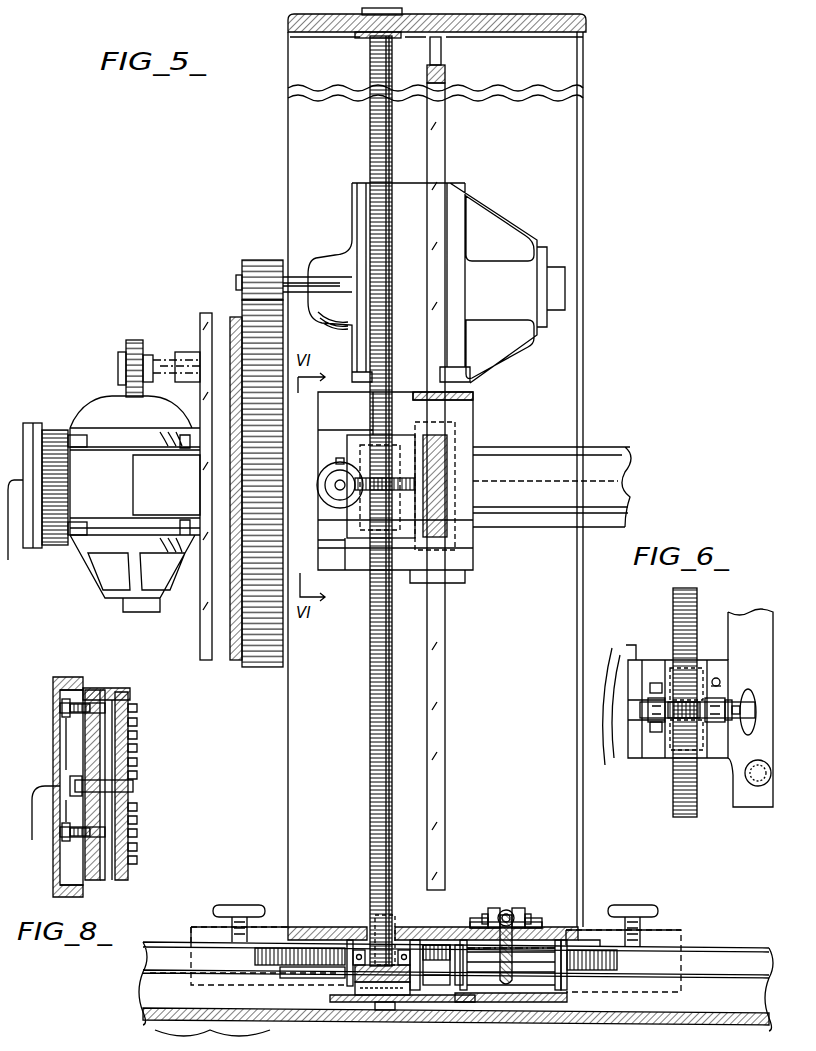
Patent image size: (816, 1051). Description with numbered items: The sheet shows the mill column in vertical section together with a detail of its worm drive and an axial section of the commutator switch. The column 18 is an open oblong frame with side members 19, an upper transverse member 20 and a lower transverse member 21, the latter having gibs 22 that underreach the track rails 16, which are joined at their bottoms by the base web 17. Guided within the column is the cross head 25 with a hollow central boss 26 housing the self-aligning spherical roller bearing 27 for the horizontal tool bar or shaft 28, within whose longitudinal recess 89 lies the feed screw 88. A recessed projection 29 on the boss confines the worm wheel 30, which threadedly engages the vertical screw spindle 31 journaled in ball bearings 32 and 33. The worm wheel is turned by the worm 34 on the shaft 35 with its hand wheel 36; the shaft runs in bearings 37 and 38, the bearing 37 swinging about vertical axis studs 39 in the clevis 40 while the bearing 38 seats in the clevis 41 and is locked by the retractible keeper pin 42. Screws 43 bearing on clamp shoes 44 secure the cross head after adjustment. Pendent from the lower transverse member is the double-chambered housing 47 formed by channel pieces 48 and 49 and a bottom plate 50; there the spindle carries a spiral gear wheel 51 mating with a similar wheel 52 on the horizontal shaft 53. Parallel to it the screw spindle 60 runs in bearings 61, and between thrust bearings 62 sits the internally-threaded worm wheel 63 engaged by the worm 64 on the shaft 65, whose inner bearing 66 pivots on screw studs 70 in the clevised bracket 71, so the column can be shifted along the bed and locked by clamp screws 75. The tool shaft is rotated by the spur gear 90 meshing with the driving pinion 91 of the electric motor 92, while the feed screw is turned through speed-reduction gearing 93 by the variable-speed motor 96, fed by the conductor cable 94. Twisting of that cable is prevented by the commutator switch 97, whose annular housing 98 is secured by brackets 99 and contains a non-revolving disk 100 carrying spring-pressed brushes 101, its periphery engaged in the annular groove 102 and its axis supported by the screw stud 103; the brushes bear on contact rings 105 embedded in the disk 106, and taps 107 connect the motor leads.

In FIG. 5, the track rails 16 is at (724, 962).
In FIG. 5, the base web 17 is at (705, 1026).
In FIG. 5, the column 18 is at (612, 383).
In FIG. 5, the side members 19 is at (585, 406).
In FIG. 5, the upper transverse member 20 is at (508, 36).
In FIG. 5, the lower transverse member 21 is at (575, 930).
In FIG. 5, the gibs 22 is at (680, 975).
In FIG. 5, the cross head 25 is at (418, 598).
In FIG. 6, the cross head 25 is at (640, 780).
In FIG. 5, the hollow central boss 26 is at (473, 558).
In FIG. 6, the hollow central boss 26 is at (615, 650).
In FIG. 5, the self-aligning spherical roller bearing 27 is at (450, 425).
In FIG. 5, the tool bar or shaft 28 is at (543, 447).
In FIG. 5, the recessed projection 29 is at (365, 540).
In FIG. 5, the worm wheel 30 is at (450, 484).
In FIG. 5, the vertical screw spindle 31 is at (370, 640).
In FIG. 6, the vertical screw spindle 31 is at (673, 598).
In FIG. 5, the ball bearing 32 is at (358, 38).
In FIG. 5, the ball bearing 33 is at (374, 1010).
In FIG. 5, the worm 34 is at (320, 528).
In FIG. 6, the worm 34 is at (686, 684).
In FIG. 5, the shaft 35 is at (328, 470).
In FIG. 6, the shaft 35 is at (738, 706).
In FIG. 5, the hand wheel 36 is at (318, 482).
In FIG. 6, the hand wheel 36 is at (750, 690).
In FIG. 6, the bearing 37 is at (648, 708).
In FIG. 6, the bearing 38 is at (730, 720).
In FIG. 6, the vertical axis studs 39 is at (654, 683).
In FIG. 6, the clevis 40 is at (628, 728).
In FIG. 6, the clevis 41 is at (710, 722).
In FIG. 5, the retractible keeper pin 42 is at (338, 440).
In FIG. 6, the retractible keeper pin 42 is at (716, 677).
In FIG. 6, the manually-operable screws 43 is at (758, 786).
In FIG. 5, the clamp shoes 44 is at (437, 722).
In FIG. 5, the double-chambered housing 47 is at (540, 1002).
In FIG. 5, the channel pieces 48 is at (348, 942).
In FIG. 5, the channel pieces 49 is at (445, 945).
In FIG. 5, the bottom plate 50 is at (386, 1003).
In FIG. 5, the spiral gear wheel 51 is at (355, 972).
In FIG. 5, the spiral gear wheel 52 is at (375, 950).
In FIG. 5, the horizontal shaft 53 is at (290, 970).
In FIG. 5, the screw spindle 60 is at (255, 962).
In FIG. 5, the bearings 61 is at (430, 990).
In FIG. 5, the thrust bearings 62 is at (582, 932).
In FIG. 5, the worm wheel 63 is at (506, 988).
In FIG. 5, the worm 64 is at (520, 908).
In FIG. 5, the shaft 65 is at (506, 909).
In FIG. 5, the bearing 66 is at (492, 908).
In FIG. 5, the screw studs 70 is at (472, 918).
In FIG. 5, the clevised bracket 71 is at (540, 922).
In FIG. 5, the clamp screws 75 is at (240, 905).
In FIG. 5, the feed screw 88 is at (632, 452).
In FIG. 5, the longitudinal recess 89 is at (630, 475).
In FIG. 5, the spur gear 90 is at (283, 327).
In FIG. 5, the driving pinion 91 is at (262, 260).
In FIG. 5, the electric motor 92 is at (522, 195).
In FIG. 5, the speed-reduction gearing 93 is at (205, 302).
In FIG. 5, the conductor cable 94 is at (12, 560).
In FIG. 8, the conductor cable 94 is at (45, 786).
In FIG. 5, the variable-speed electric motor 96 is at (113, 395).
In FIG. 5, the commutator switch 97 is at (47, 410).
In FIG. 8, the commutator switch 97 is at (131, 648).
In FIG. 8, the annular housing 98 is at (118, 692).
In FIG. 5, the brackets 99 is at (80, 525).
In FIG. 8, the non-revolving disk 100 is at (85, 858).
In FIG. 8, the spring-pressed brushes 101 is at (100, 690).
In FIG. 8, the annular groove 102 is at (95, 885).
In FIG. 8, the screw stud 103 is at (136, 784).
In FIG. 8, the contact rings 105 is at (90, 740).
In FIG. 8, the disk of insulation 106 is at (128, 700).
In FIG. 8, the taps 107 is at (140, 776).